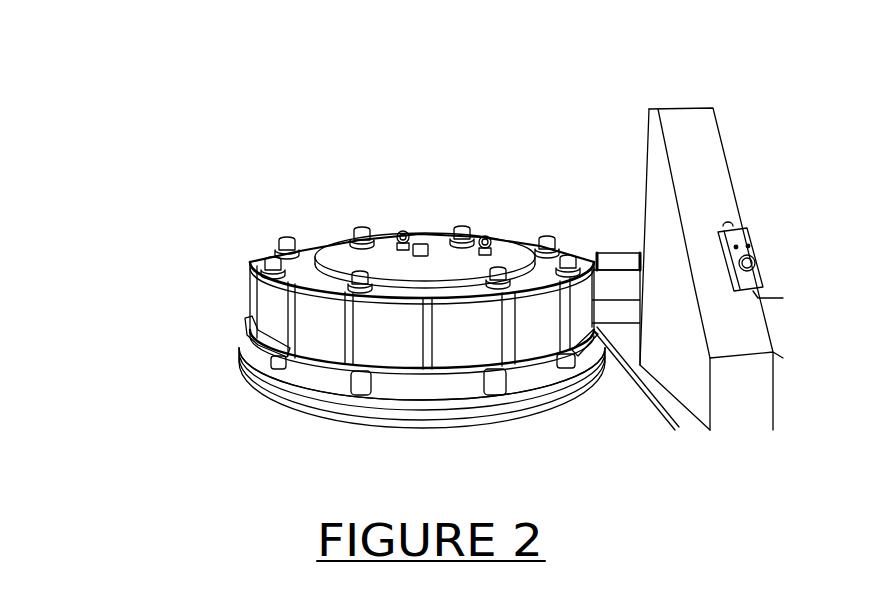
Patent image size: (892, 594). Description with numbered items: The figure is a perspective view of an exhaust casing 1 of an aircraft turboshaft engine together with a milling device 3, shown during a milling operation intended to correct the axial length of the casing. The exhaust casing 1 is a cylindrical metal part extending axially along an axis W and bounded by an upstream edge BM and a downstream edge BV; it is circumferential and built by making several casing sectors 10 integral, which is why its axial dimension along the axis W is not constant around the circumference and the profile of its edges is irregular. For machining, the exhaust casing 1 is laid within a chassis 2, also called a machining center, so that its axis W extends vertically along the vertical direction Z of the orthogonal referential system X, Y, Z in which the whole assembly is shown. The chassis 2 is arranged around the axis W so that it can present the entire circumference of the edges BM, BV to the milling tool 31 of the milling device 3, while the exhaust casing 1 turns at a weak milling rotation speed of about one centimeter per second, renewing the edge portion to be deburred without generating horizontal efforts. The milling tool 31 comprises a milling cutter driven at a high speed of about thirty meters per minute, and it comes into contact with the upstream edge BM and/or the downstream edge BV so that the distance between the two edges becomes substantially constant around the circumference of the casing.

The exhaust casing 1 is at (389, 319).
The chassis 2 is at (260, 387).
The milling device 3 is at (684, 122).
The casing sectors 10 is at (537, 330).
The milling tool 31 is at (617, 250).
The upstream edge BM is at (248, 258).
The downstream edge BV is at (245, 343).
The axis W is at (420, 244).
The X direction X is at (88, 213).
The Y direction Y is at (88, 213).
The vertical direction Z is at (88, 213).